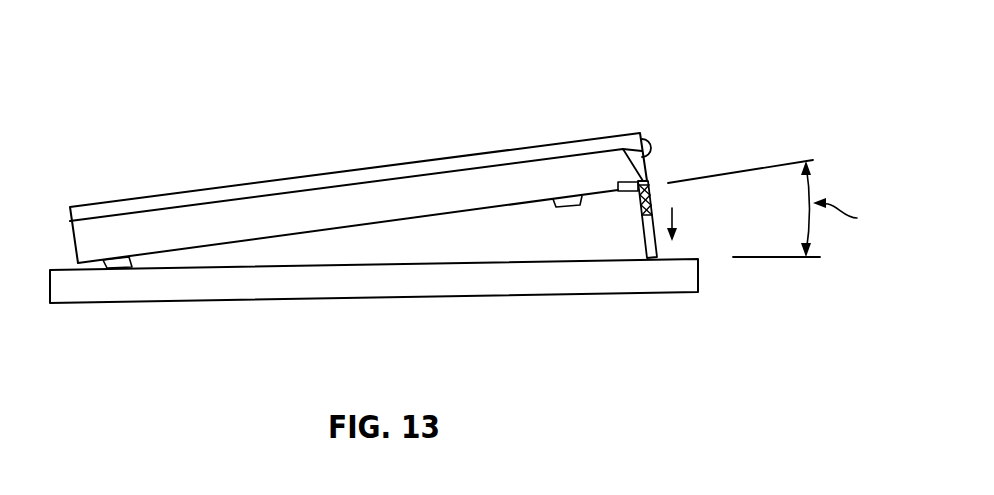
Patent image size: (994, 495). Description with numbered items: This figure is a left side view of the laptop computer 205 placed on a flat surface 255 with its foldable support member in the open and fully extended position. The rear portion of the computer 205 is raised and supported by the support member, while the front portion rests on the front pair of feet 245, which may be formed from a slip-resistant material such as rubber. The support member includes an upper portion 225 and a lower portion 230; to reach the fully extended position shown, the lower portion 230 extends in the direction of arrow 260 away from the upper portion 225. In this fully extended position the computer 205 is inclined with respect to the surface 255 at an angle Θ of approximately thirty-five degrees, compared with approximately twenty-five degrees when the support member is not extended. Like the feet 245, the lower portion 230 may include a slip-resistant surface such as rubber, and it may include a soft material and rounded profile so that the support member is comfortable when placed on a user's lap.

The laptop computer 205 is at (494, 132).
The upper portion 225 is at (623, 149).
The lower portion 230 is at (650, 257).
The feet 245 is at (120, 267).
The flat surface 255 is at (374, 281).
The arrow 260 is at (675, 211).